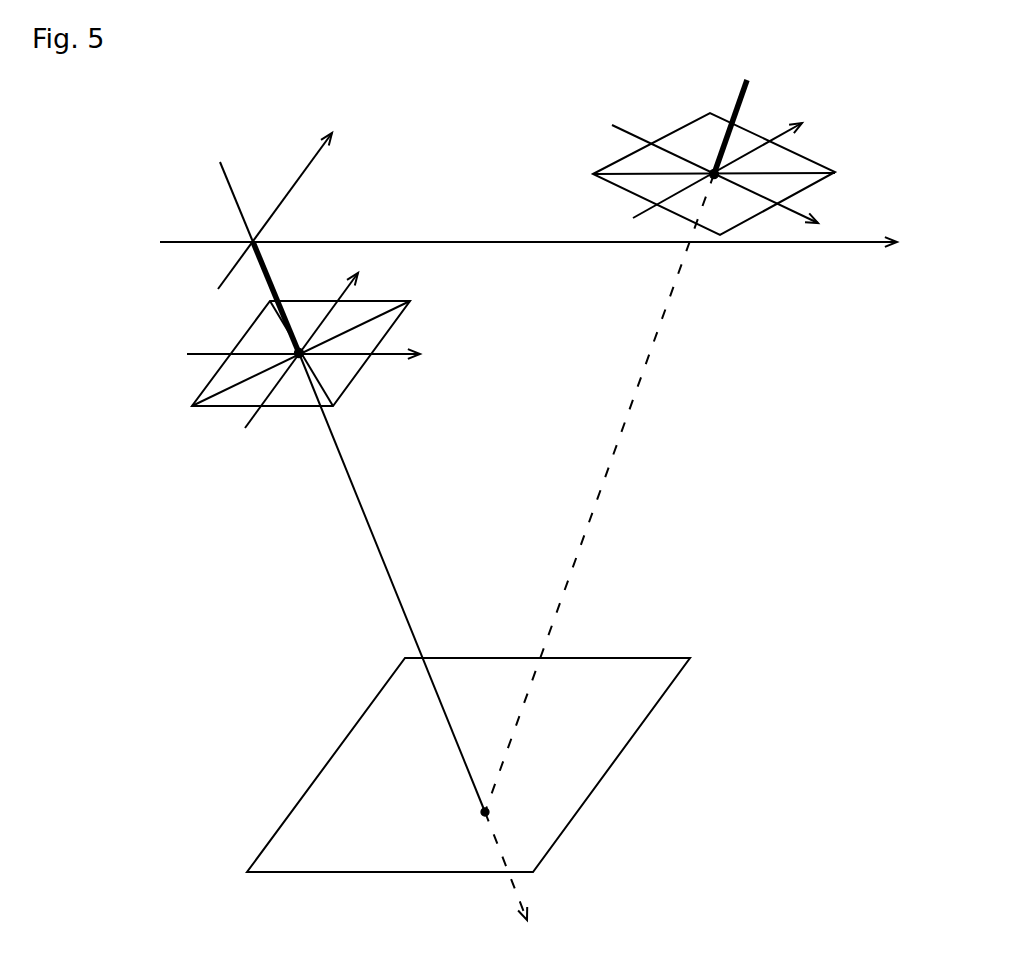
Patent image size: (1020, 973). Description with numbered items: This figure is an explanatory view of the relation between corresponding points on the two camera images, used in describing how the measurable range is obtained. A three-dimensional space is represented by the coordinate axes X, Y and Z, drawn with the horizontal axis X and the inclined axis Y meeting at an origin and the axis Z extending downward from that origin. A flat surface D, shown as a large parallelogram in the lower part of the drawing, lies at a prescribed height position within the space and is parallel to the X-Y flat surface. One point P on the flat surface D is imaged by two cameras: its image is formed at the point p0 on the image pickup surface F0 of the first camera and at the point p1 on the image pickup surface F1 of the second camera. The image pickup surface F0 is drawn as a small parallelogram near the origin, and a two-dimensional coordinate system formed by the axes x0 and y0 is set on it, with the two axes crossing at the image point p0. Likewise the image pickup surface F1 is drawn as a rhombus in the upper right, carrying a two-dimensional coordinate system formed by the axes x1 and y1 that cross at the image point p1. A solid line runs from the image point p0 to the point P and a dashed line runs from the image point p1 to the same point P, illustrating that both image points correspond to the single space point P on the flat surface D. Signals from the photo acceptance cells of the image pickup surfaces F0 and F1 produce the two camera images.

The image pickup surface F0 is at (390, 300).
The image pickup surface F1 is at (807, 157).
The image point p0 is at (302, 356).
The image point p1 is at (714, 176).
The flat surface D is at (633, 737).
The point P is at (488, 812).
The coordinate axis X is at (538, 243).
The coordinate axis Y is at (279, 198).
The coordinate axis Z is at (379, 557).
The axis x0 is at (318, 355).
The axis y0 is at (306, 338).
The axis x1 is at (731, 183).
The axis y1 is at (733, 164).